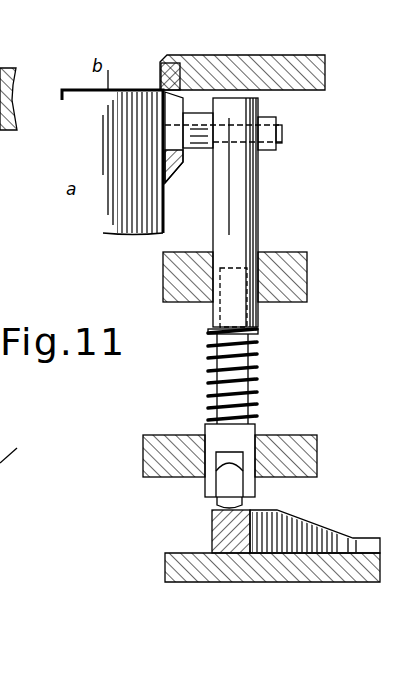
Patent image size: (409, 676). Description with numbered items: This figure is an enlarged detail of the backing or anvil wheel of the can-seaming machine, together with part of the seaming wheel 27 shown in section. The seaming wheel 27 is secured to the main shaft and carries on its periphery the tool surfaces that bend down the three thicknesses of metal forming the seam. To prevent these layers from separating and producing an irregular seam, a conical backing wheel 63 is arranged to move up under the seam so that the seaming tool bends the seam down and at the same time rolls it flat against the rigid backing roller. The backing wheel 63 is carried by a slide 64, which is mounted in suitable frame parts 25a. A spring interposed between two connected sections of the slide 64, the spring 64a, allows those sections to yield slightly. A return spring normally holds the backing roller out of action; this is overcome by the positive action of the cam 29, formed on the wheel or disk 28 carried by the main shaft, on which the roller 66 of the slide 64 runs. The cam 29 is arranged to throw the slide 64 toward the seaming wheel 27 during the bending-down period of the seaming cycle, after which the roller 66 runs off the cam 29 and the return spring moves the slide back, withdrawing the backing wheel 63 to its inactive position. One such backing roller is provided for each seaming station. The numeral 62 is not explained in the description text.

The seaming wheel 27 is at (279, 55).
The sleeve 62 is at (81, 162).
The backing wheel 63 is at (178, 123).
The slide 64 is at (235, 212).
The spring 64a is at (230, 380).
The frame parts 25a is at (272, 293).
The roller 66 is at (225, 505).
The cam track 29 is at (380, 513).
The wheel or disk 28 is at (167, 570).